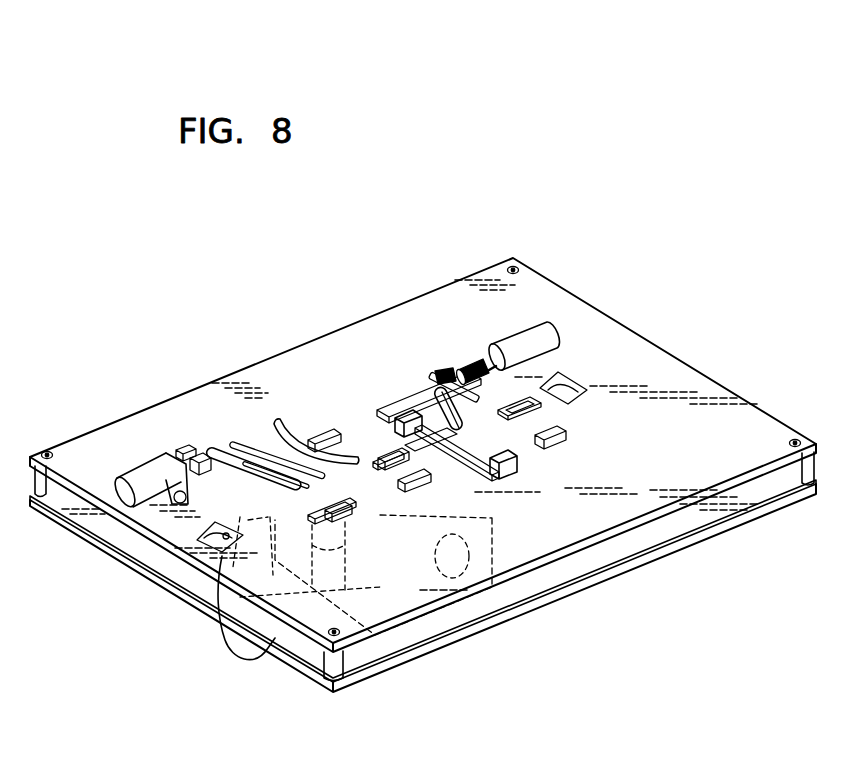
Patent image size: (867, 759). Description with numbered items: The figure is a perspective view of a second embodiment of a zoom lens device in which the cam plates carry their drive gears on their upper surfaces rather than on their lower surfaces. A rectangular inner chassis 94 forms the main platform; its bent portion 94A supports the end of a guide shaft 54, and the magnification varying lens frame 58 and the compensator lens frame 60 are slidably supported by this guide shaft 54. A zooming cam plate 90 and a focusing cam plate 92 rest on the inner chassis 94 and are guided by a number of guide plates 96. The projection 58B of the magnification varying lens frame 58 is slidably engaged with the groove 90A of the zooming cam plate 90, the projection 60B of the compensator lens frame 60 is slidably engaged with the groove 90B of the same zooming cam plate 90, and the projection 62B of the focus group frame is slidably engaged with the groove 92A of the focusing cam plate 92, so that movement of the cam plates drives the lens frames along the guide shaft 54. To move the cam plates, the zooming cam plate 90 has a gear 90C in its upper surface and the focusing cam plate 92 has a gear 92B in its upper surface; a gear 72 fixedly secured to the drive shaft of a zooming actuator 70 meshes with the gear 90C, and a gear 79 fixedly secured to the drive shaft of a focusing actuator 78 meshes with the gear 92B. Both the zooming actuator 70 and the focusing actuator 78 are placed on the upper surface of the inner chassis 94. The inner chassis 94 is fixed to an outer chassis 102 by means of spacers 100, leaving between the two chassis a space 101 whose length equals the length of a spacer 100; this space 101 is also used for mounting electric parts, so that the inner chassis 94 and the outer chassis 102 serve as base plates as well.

The guide shaft 54 is at (225, 560).
The magnification varying lens frame 58 is at (330, 522).
The projection of magnification varying lens frame 58B is at (335, 442).
The compensator lens frame 60 is at (368, 500).
The projection of compensator lens frame 60B is at (362, 457).
The projection of focus group frame 62B is at (540, 412).
The zooming actuator 70 is at (135, 480).
The gear of zooming actuator 72 is at (178, 458).
The focusing actuator 78 is at (547, 338).
The gear of focusing actuator 79 is at (478, 368).
The zooming cam plate 90 is at (240, 409).
The groove of zooming cam plate 90A is at (255, 445).
The groove of zooming cam plate 90B is at (291, 424).
The gear of zooming cam plate 90C is at (190, 455).
The focusing cam plate 92 is at (405, 395).
The groove of focusing cam plate 92A is at (448, 393).
The gear of focusing cam plate 92B is at (446, 375).
The inner chassis 94 is at (700, 385).
The bent portion of inner chassis 94A is at (575, 385).
The guide plate 96 is at (395, 405).
The spacer 100 is at (45, 495).
The space 101 is at (600, 585).
The outer chassis 102 is at (668, 582).